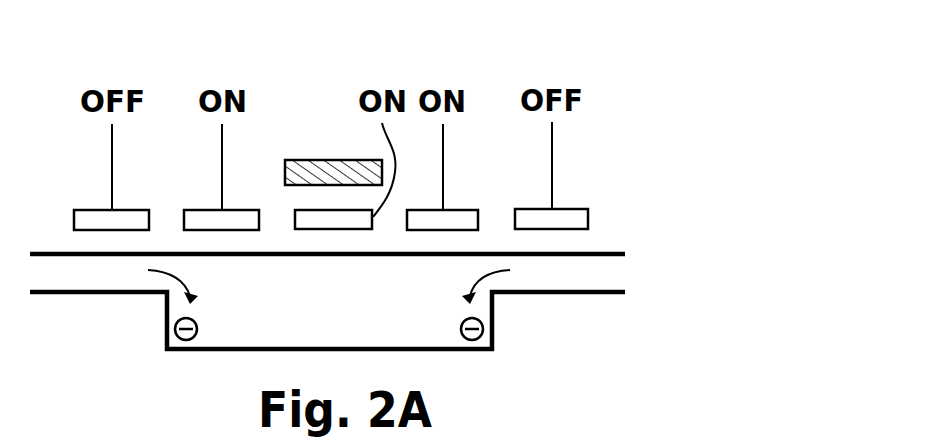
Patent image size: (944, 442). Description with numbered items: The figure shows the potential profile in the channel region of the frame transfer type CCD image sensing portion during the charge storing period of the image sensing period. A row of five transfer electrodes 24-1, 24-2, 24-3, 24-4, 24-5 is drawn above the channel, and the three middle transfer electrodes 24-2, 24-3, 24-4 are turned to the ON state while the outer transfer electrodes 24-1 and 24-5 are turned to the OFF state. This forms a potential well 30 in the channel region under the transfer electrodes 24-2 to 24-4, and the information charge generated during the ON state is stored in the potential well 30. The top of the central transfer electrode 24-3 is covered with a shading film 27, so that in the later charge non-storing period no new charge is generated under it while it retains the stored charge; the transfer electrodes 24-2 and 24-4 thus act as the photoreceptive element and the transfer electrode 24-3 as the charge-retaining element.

The transfer electrode 24-1 is at (101, 177).
The transfer electrode 24-2 is at (212, 177).
The transfer electrode 24-3 is at (331, 189).
The transfer electrode 24-4 is at (452, 177).
The transfer electrode 24-5 is at (561, 175).
The shading film 27 is at (310, 165).
The potential well 30 is at (484, 322).